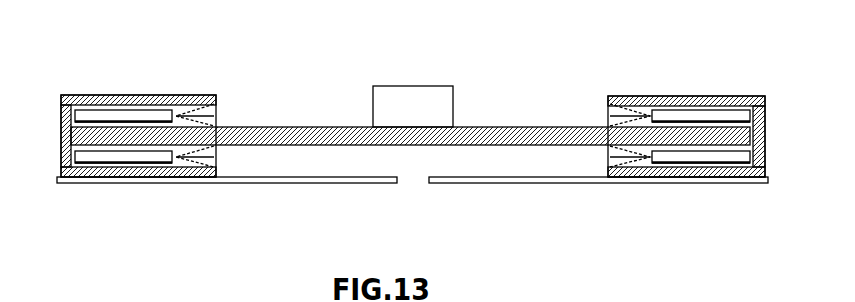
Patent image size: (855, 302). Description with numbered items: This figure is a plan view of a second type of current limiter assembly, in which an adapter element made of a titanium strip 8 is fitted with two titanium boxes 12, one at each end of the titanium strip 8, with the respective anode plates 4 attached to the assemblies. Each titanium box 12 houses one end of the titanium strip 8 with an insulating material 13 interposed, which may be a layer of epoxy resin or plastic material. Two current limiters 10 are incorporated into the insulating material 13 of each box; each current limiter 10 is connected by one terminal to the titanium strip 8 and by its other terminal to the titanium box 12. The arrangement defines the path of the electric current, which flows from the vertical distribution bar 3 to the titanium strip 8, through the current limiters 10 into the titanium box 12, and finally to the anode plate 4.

The vertical distribution bar 3 is at (387, 86).
The anode plate 4 is at (263, 180).
The titanium strip 8 is at (345, 145).
The current limiter 10 is at (91, 113).
The titanium box 12 is at (178, 96).
The insulating material 13 is at (208, 112).